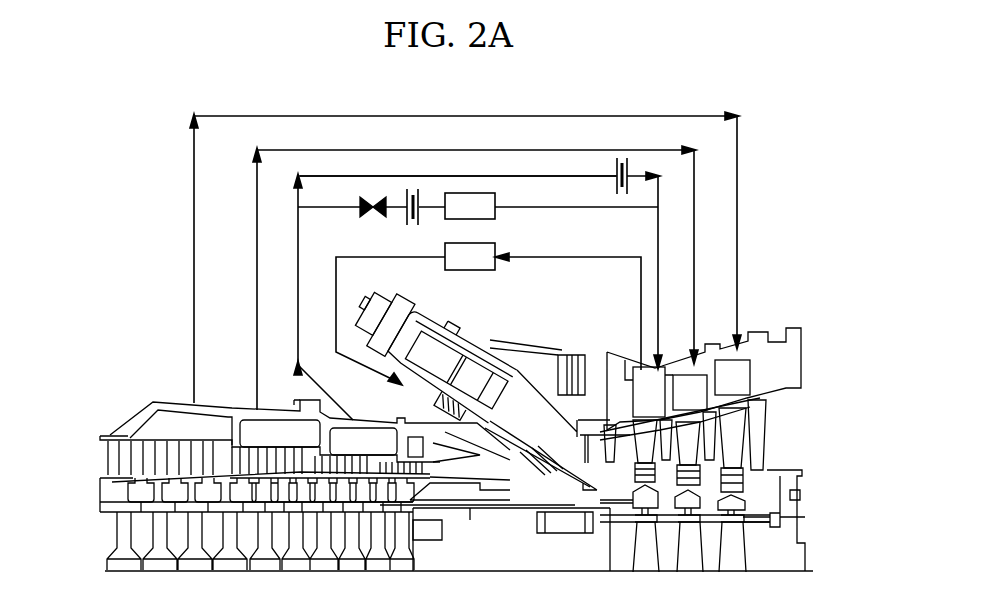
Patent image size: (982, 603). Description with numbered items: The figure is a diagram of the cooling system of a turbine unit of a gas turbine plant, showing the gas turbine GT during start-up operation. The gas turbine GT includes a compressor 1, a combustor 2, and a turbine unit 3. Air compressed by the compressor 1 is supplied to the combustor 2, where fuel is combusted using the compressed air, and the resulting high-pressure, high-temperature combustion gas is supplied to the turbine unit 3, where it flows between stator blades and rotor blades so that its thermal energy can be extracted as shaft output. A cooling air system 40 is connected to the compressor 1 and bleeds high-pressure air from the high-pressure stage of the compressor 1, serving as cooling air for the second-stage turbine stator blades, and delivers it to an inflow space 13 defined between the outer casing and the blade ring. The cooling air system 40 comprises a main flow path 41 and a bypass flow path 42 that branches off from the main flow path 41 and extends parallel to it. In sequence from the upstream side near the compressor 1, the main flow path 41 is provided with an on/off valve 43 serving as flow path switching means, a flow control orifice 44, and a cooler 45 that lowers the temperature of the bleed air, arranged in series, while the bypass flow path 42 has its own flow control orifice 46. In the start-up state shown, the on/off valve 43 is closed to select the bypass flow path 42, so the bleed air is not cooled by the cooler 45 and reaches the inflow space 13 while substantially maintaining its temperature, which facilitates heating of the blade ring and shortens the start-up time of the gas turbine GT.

The compressor 1 is at (93, 452).
The combustor 2 is at (478, 342).
The turbine unit 3 is at (798, 438).
The inflow space 13 is at (650, 390).
The cooling air system 40 is at (673, 239).
The main flow path 41 is at (560, 208).
The bypass flow path 42 is at (553, 176).
The on/off valve 43 is at (360, 212).
The flow control orifice 44 is at (406, 214).
The cooler 45 is at (497, 206).
The flow control orifice 46 is at (629, 180).
The gas turbine GT is at (765, 258).